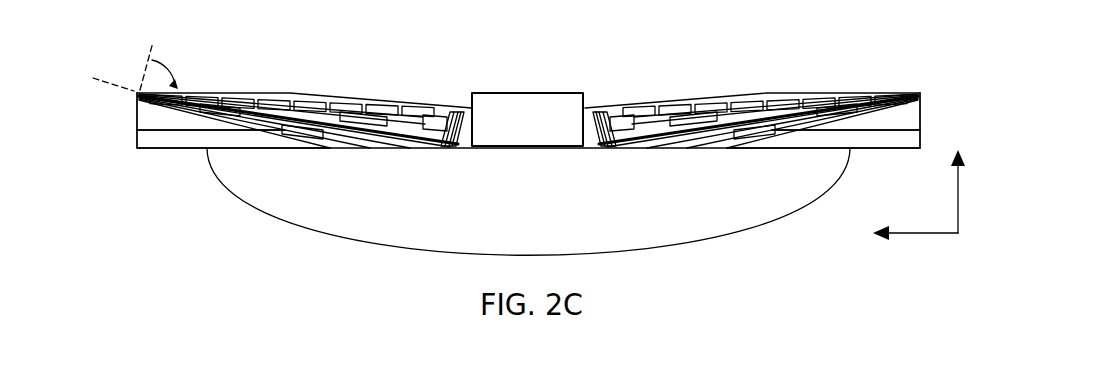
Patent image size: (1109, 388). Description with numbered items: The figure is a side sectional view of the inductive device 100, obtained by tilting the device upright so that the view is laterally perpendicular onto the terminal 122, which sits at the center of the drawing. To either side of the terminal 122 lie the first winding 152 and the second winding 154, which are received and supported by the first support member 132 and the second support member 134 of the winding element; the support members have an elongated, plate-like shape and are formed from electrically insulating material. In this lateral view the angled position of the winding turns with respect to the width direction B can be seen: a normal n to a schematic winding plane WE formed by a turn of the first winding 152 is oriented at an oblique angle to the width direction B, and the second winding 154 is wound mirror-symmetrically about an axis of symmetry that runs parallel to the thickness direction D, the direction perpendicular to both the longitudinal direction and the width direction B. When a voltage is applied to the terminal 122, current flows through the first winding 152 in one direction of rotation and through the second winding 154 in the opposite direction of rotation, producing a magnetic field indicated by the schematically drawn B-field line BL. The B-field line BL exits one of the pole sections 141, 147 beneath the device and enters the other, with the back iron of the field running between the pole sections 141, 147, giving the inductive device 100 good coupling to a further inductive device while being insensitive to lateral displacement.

The inductive device 100 is at (235, 55).
The terminal 122 is at (552, 133).
The first support member 132 is at (137, 125).
The second support member 134 is at (920, 121).
The pole section 141 is at (152, 149).
The pole section 147 is at (868, 149).
The first winding 152 is at (305, 150).
The second winding 154 is at (750, 150).
The winding plane WE is at (103, 78).
The normal n is at (157, 38).
The B-field line BL is at (741, 237).
The thickness direction D is at (958, 203).
The width direction B is at (928, 236).